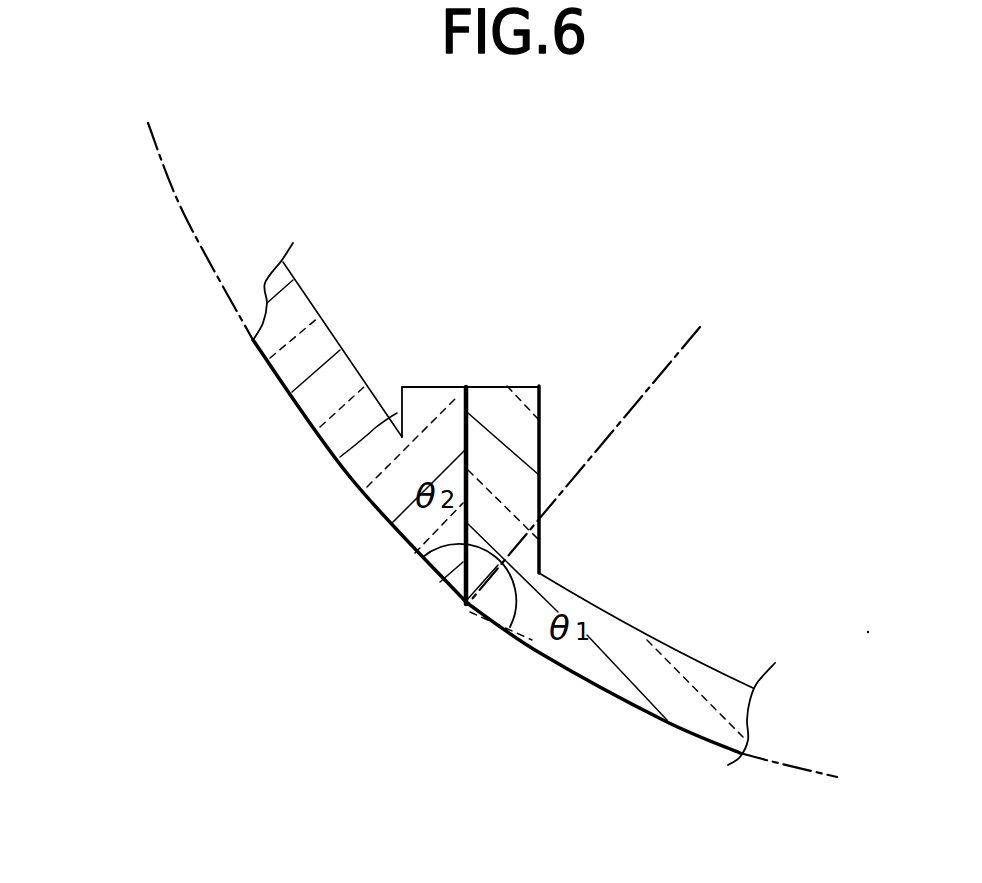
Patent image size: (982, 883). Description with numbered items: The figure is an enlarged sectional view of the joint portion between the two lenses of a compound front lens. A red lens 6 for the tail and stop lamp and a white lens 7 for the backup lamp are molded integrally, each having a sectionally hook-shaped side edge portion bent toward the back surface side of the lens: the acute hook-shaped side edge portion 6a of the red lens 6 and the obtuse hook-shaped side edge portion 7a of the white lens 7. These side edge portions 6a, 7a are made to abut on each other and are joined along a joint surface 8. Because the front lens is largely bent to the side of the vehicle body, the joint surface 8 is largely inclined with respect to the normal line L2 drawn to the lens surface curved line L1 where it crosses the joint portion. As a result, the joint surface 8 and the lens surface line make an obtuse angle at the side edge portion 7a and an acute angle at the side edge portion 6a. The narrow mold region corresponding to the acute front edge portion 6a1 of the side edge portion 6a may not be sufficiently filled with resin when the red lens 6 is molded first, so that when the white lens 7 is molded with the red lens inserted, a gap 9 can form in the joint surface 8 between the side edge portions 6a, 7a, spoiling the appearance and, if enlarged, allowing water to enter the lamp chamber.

The lens surface curved line L1 is at (183, 213).
The normal line L2 is at (612, 430).
The red lens 6 is at (278, 378).
The acute hook-shaped side edge portion 6a is at (355, 479).
The acute front edge portion 6a1 is at (443, 581).
The white lens 7 is at (607, 692).
The obtuse hook-shaped side edge portion 7a is at (539, 450).
The joint surface 8 is at (466, 448).
The gap 9 is at (465, 603).